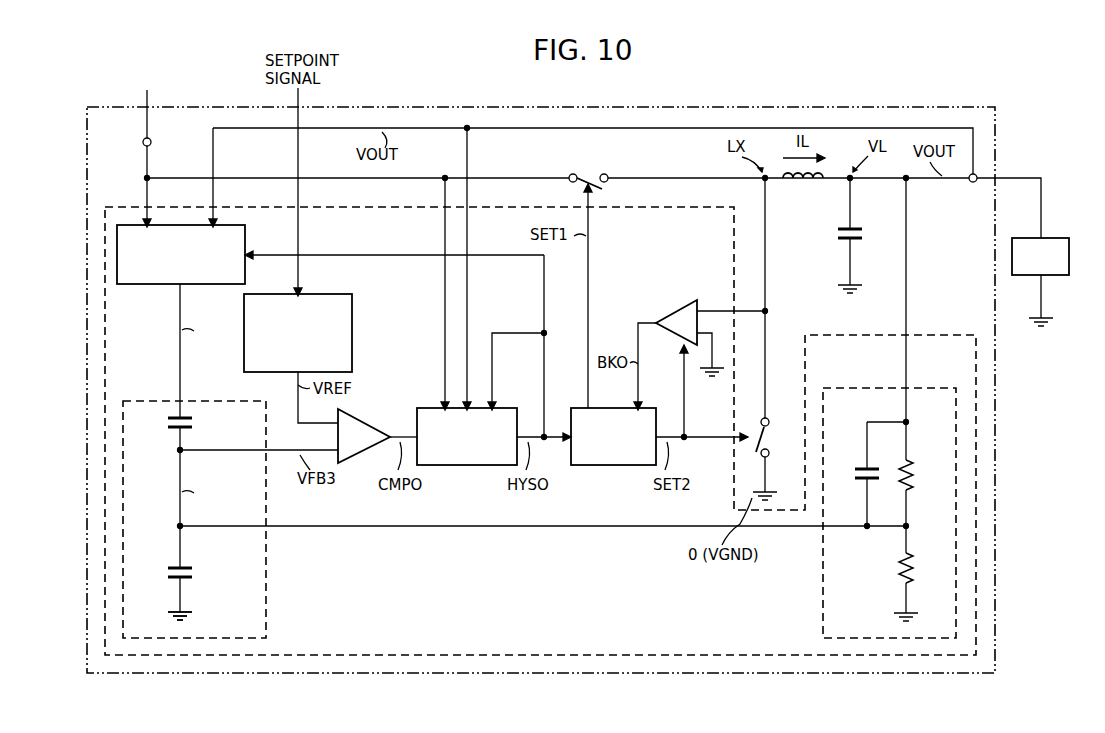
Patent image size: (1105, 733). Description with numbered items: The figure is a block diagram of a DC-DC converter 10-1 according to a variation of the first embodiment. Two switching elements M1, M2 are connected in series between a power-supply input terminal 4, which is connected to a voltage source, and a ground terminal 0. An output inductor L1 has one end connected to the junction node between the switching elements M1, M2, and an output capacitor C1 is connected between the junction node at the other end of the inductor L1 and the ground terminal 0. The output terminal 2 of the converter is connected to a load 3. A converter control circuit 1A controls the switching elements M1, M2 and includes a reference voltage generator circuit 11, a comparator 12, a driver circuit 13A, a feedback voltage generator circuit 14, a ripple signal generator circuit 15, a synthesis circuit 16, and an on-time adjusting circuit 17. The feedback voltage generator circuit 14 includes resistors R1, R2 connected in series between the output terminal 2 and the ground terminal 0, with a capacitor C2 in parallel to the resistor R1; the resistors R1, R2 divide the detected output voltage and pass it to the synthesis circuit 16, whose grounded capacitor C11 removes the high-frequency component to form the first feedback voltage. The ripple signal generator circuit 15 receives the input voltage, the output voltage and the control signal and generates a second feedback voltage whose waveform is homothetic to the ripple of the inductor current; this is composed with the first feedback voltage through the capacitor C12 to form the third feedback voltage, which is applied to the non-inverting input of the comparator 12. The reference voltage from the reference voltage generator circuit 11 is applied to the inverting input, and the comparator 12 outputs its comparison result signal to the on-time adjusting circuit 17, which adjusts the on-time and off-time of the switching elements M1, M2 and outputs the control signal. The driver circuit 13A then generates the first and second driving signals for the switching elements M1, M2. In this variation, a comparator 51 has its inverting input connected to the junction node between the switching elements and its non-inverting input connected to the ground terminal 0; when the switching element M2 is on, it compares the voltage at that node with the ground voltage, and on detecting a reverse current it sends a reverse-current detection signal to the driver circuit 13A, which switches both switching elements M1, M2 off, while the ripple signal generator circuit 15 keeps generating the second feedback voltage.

The DC-DC converter 10-1 is at (940, 107).
The converter control circuit 1A is at (950, 335).
The power-supply input terminal 4 is at (142, 146).
The ripple signal generator circuit 15 is at (155, 284).
The reference voltage generator circuit 11 is at (352, 331).
The comparator 12 is at (366, 422).
The on-time adjusting circuit 17 is at (460, 465).
The driver circuit 13A is at (612, 465).
The comparator 51 is at (675, 312).
The synthesis circuit 16 is at (211, 461).
The feedback voltage generator circuit 14 is at (869, 408).
The output terminal 2 is at (968, 187).
The load 3 is at (1062, 238).
The ground terminal 0 is at (185, 612).
The switching element M1 is at (588, 169).
The switching element M2 is at (776, 339).
The output inductor L1 is at (805, 184).
The output capacitor C1 is at (840, 245).
The capacitor C2 is at (860, 476).
The resistor R1 is at (914, 471).
The resistor R2 is at (914, 564).
The capacitor C11 is at (168, 565).
The capacitor C12 is at (168, 430).